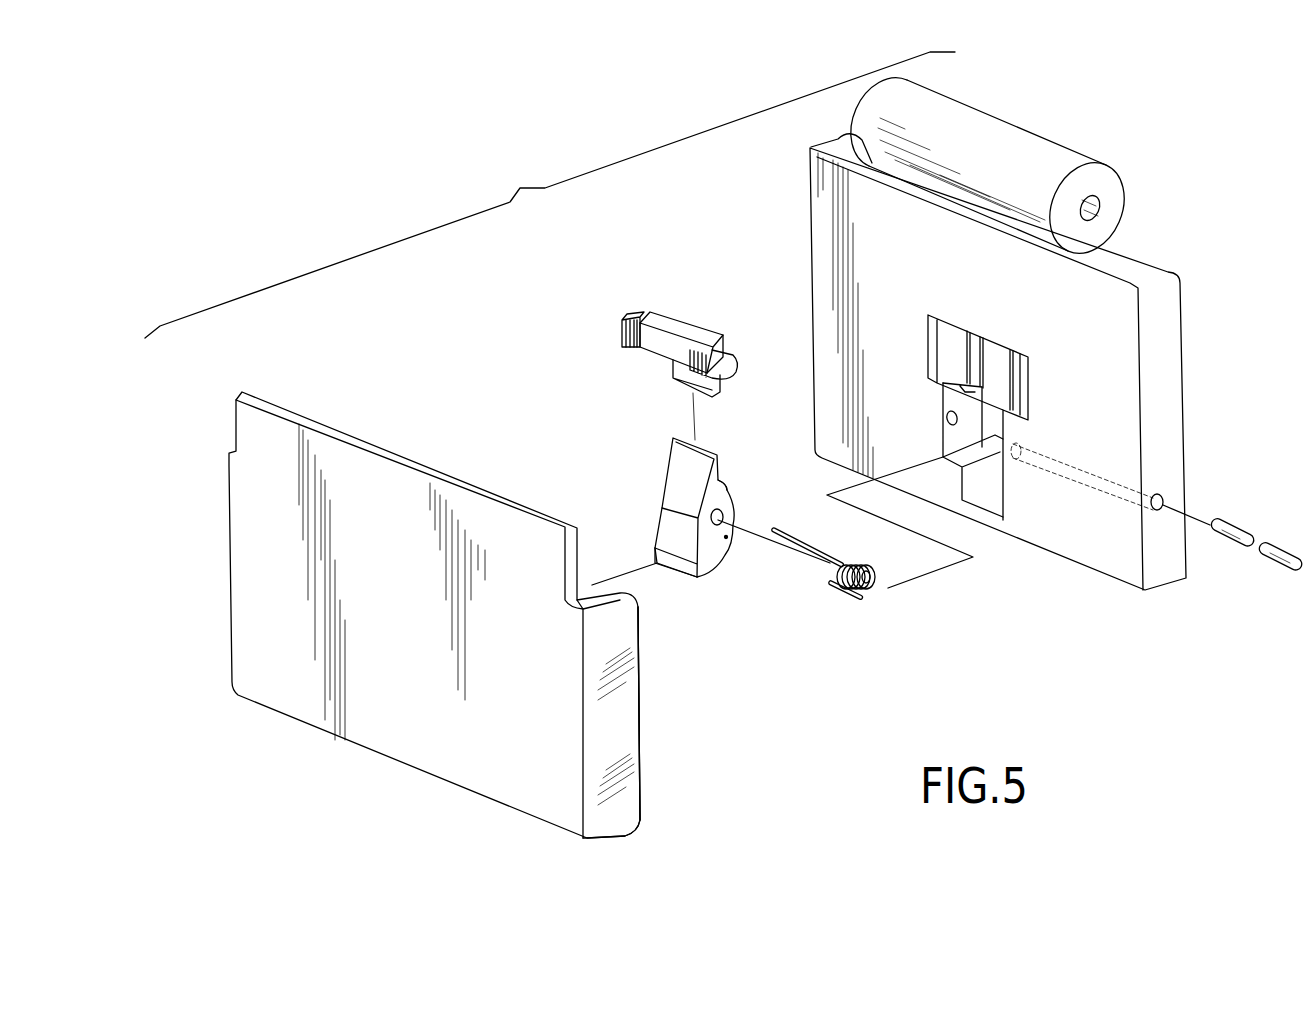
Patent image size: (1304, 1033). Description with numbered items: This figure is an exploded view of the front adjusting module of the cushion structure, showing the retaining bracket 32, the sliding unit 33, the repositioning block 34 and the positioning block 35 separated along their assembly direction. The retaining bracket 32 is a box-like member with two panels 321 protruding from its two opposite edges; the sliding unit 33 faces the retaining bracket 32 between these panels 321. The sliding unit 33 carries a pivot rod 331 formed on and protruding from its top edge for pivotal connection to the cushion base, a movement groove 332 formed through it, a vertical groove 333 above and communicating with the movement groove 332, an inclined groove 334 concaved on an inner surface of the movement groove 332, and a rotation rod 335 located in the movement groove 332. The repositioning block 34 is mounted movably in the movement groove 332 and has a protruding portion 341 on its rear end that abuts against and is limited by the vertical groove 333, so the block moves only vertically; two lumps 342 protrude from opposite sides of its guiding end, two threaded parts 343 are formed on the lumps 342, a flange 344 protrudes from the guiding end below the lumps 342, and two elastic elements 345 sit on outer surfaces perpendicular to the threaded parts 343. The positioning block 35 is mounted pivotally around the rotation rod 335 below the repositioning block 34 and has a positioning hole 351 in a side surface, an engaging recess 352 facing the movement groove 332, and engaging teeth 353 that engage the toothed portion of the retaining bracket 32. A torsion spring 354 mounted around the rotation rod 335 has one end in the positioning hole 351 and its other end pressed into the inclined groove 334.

The retaining bracket 32 is at (472, 615).
The panels 321 is at (637, 678).
The sliding unit 33 is at (1057, 349).
The pivot rod 331 is at (1010, 138).
The movement groove 332 is at (990, 405).
The vertical groove 333 is at (1000, 353).
The inclined groove 334 is at (962, 388).
The rotation rod 335 is at (1280, 558).
The repositioning block 34 is at (667, 355).
The protruding portion 341 is at (699, 322).
The lumps 342 is at (622, 318).
The threaded parts 343 is at (622, 340).
The flange 344 is at (683, 383).
The elastic elements 345 is at (737, 368).
The positioning block 35 is at (694, 517).
The positioning hole 351 is at (728, 540).
The engaging recess 352 is at (727, 488).
The engaging teeth 353 is at (658, 548).
The torsion spring 354 is at (870, 588).